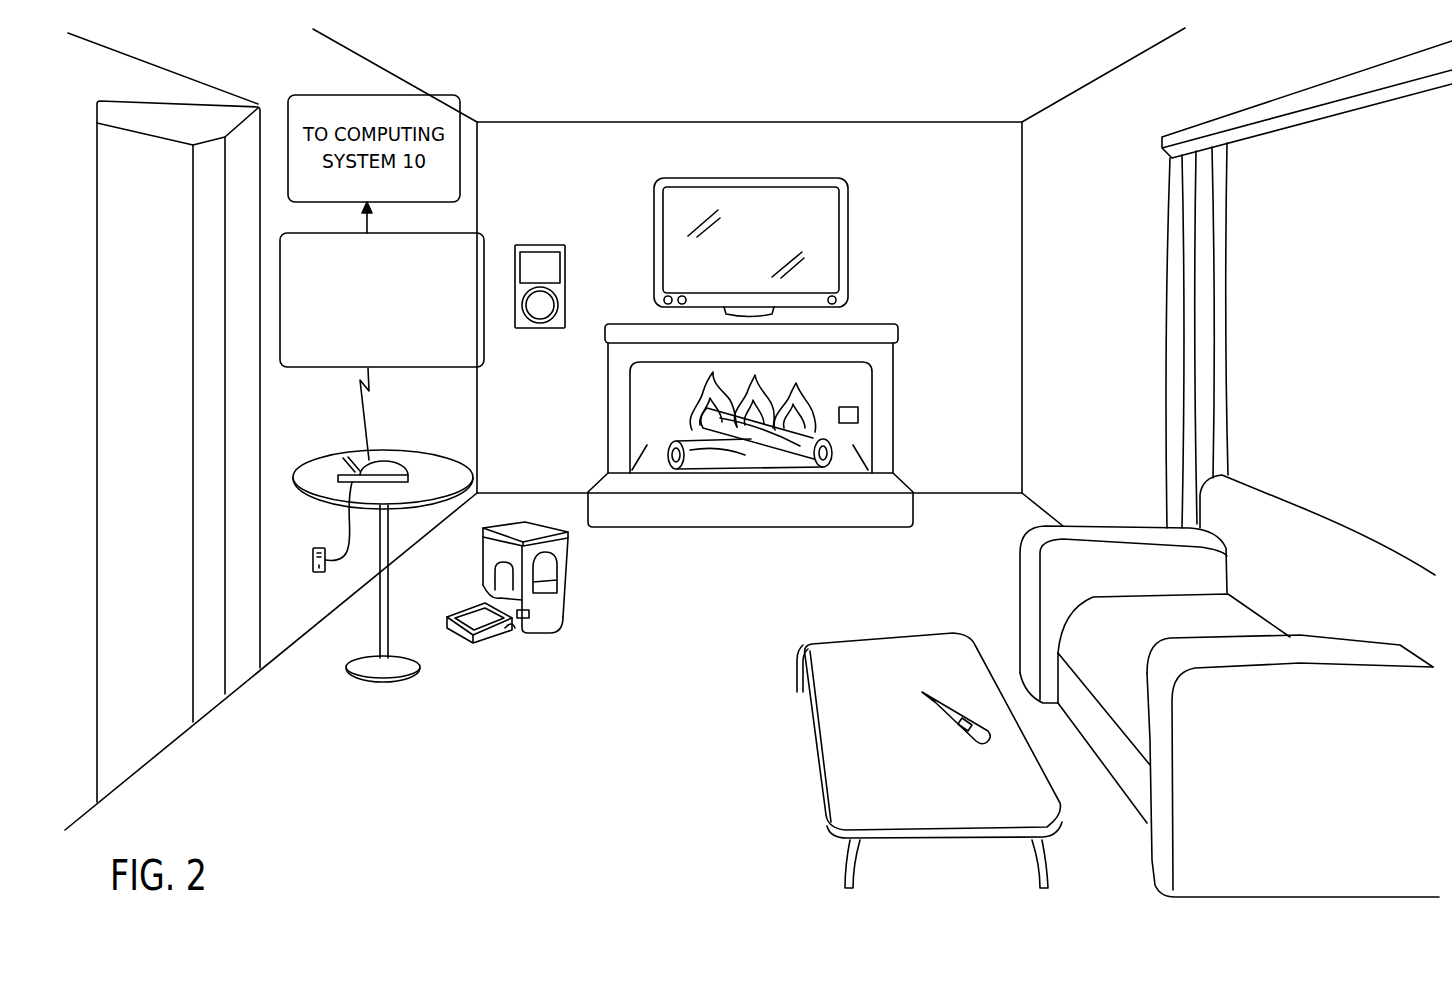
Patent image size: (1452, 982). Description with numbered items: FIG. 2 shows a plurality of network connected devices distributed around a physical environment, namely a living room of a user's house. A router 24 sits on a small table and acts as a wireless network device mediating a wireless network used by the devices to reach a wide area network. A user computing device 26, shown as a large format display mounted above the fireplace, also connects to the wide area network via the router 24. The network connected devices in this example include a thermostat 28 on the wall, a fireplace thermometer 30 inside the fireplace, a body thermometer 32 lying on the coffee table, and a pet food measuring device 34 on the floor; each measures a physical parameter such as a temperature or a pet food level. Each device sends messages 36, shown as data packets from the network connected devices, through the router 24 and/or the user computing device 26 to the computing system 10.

The computing system 10 is at (922, 96).
The router 24 is at (378, 470).
The user computing device 26 is at (755, 178).
The thermostat 28 is at (558, 252).
The fireplace thermometer 30 is at (848, 415).
The body thermometer 32 is at (962, 716).
The pet food measuring device 34 is at (529, 616).
The messages 36 is at (382, 346).